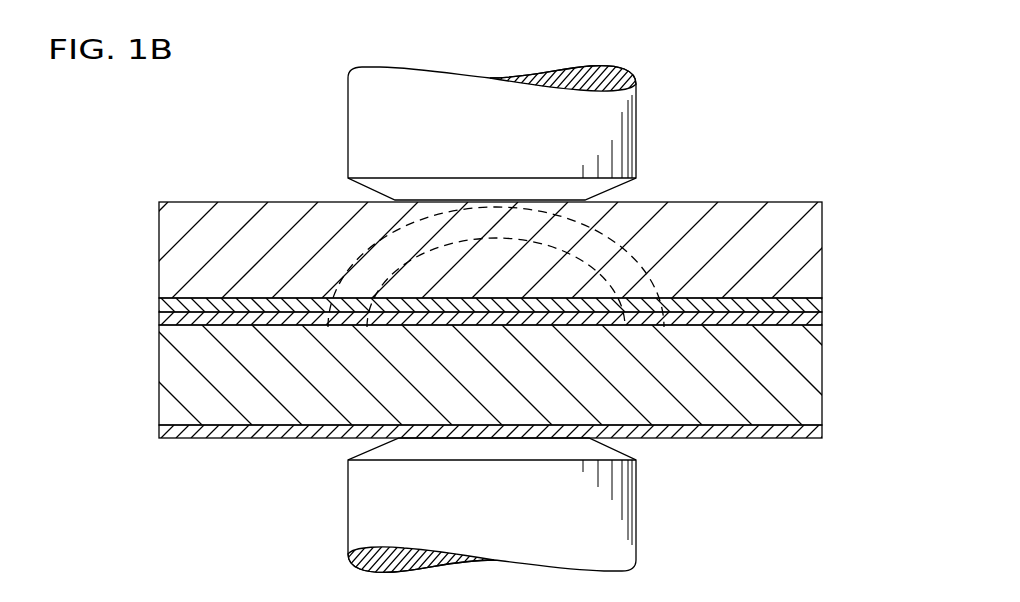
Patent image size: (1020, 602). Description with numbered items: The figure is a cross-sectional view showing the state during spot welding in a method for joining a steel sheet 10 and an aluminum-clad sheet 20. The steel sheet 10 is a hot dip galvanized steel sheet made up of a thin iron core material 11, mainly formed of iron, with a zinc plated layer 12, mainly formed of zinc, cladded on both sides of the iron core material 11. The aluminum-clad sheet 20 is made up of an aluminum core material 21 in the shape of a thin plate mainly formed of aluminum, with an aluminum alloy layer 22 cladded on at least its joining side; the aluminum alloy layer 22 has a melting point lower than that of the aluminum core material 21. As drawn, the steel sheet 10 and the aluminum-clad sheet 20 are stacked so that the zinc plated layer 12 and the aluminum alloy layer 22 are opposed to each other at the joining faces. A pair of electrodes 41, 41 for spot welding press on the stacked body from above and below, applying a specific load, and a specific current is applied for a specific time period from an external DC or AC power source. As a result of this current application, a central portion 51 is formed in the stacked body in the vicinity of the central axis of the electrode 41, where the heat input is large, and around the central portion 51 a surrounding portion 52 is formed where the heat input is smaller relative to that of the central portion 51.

The steel sheet 10 is at (477, 406).
The iron core material 11 is at (822, 366).
The zinc plated layer 12 is at (822, 318).
The aluminum-clad sheet 20 is at (495, 223).
The aluminum core material 21 is at (822, 236).
The aluminum alloy layer 22 is at (822, 302).
The electrode 41 is at (632, 132).
The central portion 51 is at (374, 284).
The surrounding portion 52 is at (331, 283).